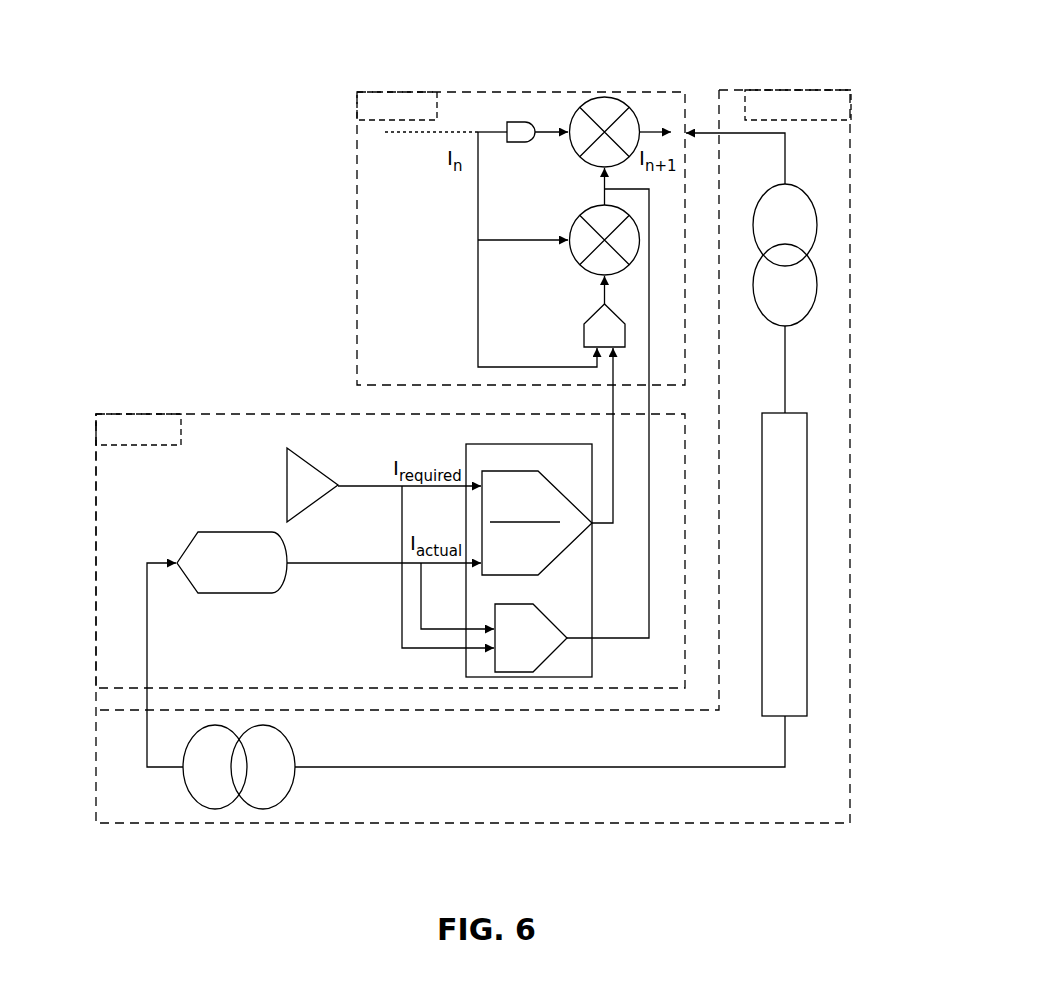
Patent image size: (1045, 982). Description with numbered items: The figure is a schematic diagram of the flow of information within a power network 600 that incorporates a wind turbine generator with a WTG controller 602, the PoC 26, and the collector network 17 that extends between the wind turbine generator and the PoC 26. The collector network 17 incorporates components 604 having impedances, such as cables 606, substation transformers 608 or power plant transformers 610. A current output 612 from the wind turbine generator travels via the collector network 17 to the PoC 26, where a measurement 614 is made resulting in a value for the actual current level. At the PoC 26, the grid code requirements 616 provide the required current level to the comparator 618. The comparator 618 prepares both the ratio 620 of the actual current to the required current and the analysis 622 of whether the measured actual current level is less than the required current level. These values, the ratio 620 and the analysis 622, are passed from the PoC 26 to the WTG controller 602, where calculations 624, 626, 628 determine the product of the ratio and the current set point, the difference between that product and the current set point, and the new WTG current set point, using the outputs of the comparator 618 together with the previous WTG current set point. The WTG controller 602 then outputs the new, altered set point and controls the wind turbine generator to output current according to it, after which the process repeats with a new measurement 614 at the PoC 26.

The power network 600 is at (135, 66).
The WTG controller 602 is at (479, 88).
The collector network 17 is at (736, 88).
The PoC 26 is at (210, 412).
The components 604 is at (808, 768).
The cables 606 is at (807, 498).
The substation transformers 608 is at (217, 810).
The power plant transformers 610 is at (817, 292).
The current output 612 is at (785, 148).
The measurement 614 is at (230, 532).
The grid code requirements 616 is at (307, 458).
The comparator 618 is at (463, 652).
The ratio 620 is at (550, 565).
The analysis 622 is at (550, 653).
The calculation of product 624 is at (595, 310).
The calculation of difference 626 is at (584, 210).
The calculation of new set point 628 is at (602, 96).